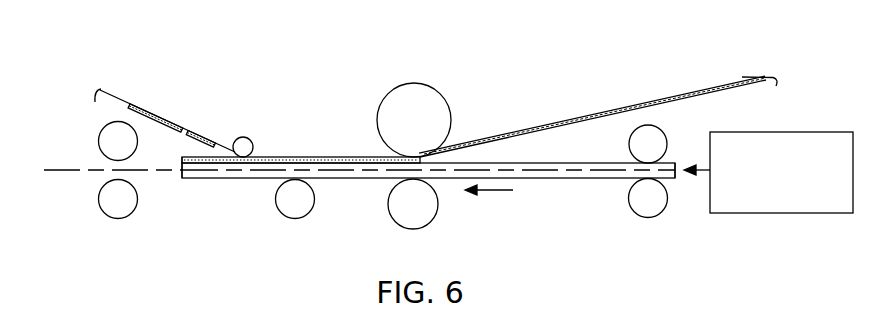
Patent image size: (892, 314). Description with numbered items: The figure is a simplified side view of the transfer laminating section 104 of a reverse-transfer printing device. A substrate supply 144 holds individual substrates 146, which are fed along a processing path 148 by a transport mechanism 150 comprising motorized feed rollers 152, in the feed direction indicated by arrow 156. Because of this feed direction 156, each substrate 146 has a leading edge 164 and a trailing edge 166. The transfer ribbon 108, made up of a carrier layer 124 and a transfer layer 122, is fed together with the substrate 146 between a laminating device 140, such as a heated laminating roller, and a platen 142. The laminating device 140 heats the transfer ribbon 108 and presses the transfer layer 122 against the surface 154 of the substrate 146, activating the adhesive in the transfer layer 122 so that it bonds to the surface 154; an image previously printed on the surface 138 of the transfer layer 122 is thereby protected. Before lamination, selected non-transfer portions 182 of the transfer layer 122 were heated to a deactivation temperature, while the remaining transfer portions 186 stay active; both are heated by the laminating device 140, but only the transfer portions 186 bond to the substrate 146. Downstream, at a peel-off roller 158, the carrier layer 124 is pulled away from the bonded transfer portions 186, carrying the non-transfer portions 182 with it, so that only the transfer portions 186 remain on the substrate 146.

The transfer laminating section 104 is at (145, 32).
The transfer ribbon 108 is at (603, 110).
The transfer layer 122 is at (673, 101).
The carrier layer 124 is at (110, 90).
The surface of the transfer layer 138 is at (722, 103).
The laminating device 140 is at (395, 98).
The platen 142 is at (398, 213).
The substrate supply 144 is at (817, 132).
The substrate 146 is at (550, 177).
The processing path 148 is at (65, 170).
The transport mechanism 150 is at (702, 262).
The motorized feed rollers 152 is at (110, 208).
The surface of the substrate 154 is at (532, 152).
The feed direction 156 is at (488, 191).
The peel-off roller 158 is at (248, 138).
The leading edge 164 is at (183, 173).
The trailing edge 166 is at (677, 176).
The non-transfer portions 182 is at (148, 110).
The transfer portions 186 is at (208, 165).